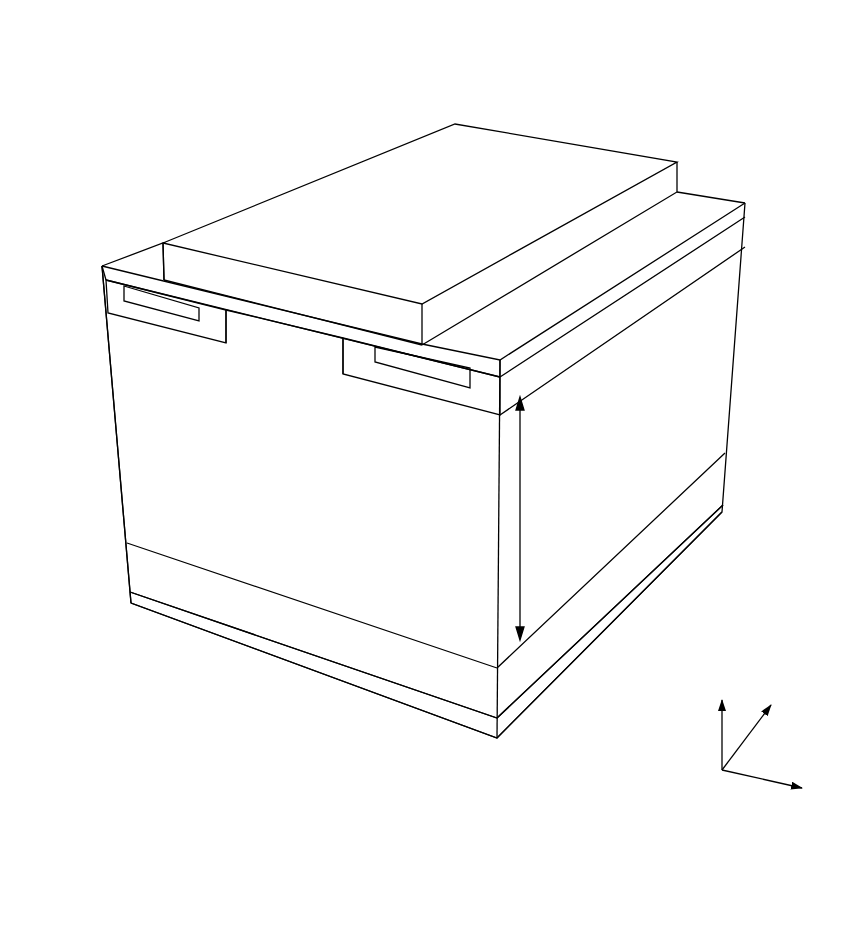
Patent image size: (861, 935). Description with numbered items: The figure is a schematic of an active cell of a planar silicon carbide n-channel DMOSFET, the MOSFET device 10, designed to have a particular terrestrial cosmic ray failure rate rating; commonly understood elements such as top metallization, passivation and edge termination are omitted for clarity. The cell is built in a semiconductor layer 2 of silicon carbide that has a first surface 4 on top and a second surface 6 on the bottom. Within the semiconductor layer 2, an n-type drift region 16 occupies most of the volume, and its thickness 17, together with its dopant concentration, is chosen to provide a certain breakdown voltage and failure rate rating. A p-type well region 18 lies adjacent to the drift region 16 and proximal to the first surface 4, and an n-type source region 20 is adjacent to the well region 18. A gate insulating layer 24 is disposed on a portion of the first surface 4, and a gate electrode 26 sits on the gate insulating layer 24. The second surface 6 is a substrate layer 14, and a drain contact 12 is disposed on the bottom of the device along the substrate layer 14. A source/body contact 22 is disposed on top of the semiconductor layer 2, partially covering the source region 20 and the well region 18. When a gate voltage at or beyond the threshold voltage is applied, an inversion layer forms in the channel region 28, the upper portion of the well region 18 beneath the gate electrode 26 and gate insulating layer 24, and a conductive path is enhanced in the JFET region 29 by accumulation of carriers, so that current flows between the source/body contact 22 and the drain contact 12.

The MOSFET device 10 is at (345, 70).
The semiconductor layer 2 is at (748, 357).
The first surface 4 is at (754, 226).
The second surface 6 is at (740, 474).
The drain contact 12 is at (178, 628).
The substrate layer 14 is at (150, 568).
The drift region 16 is at (104, 420).
The thickness 17 is at (524, 522).
The well region 18 is at (140, 313).
The source region 20 is at (124, 293).
The source/body contact 22 is at (122, 268).
The gate insulating layer 24 is at (181, 292).
The gate electrode 26 is at (586, 165).
The channel region 28 is at (230, 320).
The JFET region 29 is at (287, 366).